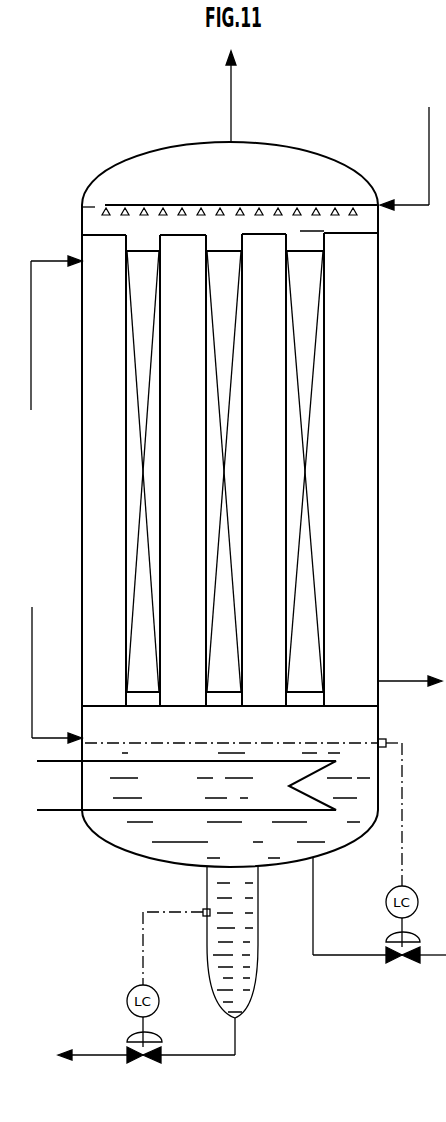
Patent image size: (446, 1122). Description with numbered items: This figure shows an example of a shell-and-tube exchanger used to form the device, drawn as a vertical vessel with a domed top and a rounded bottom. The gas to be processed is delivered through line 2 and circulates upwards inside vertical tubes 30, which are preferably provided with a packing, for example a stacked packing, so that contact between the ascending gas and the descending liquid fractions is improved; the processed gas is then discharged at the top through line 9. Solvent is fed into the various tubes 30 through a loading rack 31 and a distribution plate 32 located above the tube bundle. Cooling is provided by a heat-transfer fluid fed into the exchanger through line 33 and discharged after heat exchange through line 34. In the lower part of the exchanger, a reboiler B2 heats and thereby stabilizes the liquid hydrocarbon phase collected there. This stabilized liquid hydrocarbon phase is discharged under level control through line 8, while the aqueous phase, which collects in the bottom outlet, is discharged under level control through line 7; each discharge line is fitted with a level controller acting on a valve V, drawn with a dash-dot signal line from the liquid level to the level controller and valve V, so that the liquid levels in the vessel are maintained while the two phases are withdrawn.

The line 9 is at (232, 93).
The loading rack 31 is at (307, 205).
The distribution plate 32 is at (98, 234).
The line 33 is at (42, 260).
The vertical tubes 30 is at (137, 469).
The line 2 is at (32, 607).
The line 34 is at (405, 680).
The reboiler B2 is at (58, 812).
The line 7 is at (219, 1058).
The line 8 is at (344, 956).
The valve V is at (273, 1013).